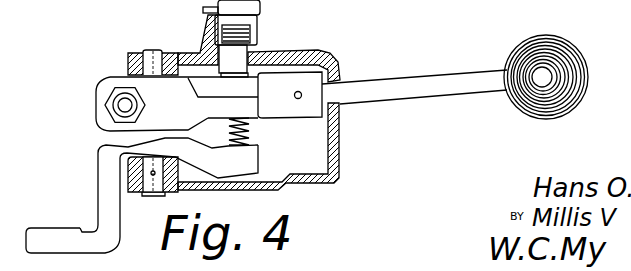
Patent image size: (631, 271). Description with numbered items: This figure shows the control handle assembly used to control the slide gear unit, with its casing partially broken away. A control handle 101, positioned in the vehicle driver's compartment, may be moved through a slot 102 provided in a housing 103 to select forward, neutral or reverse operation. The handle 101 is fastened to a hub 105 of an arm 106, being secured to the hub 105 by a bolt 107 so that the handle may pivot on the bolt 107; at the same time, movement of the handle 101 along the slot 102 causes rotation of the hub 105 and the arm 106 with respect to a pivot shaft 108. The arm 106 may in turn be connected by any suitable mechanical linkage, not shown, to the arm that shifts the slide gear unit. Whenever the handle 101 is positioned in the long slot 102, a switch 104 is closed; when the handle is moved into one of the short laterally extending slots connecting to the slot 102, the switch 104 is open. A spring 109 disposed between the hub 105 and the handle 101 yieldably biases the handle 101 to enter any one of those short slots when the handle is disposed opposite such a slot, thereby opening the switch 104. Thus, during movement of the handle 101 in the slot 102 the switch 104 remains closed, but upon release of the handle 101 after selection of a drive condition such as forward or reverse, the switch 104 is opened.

The control handle 101 is at (381, 90).
The slot 102 is at (341, 113).
The housing 103 is at (320, 58).
The switch 104 is at (267, 28).
The hub 105 is at (131, 149).
The arm 106 is at (53, 237).
The bolt 107 is at (123, 105).
The pivot shaft 108 is at (160, 50).
The spring 109 is at (252, 139).